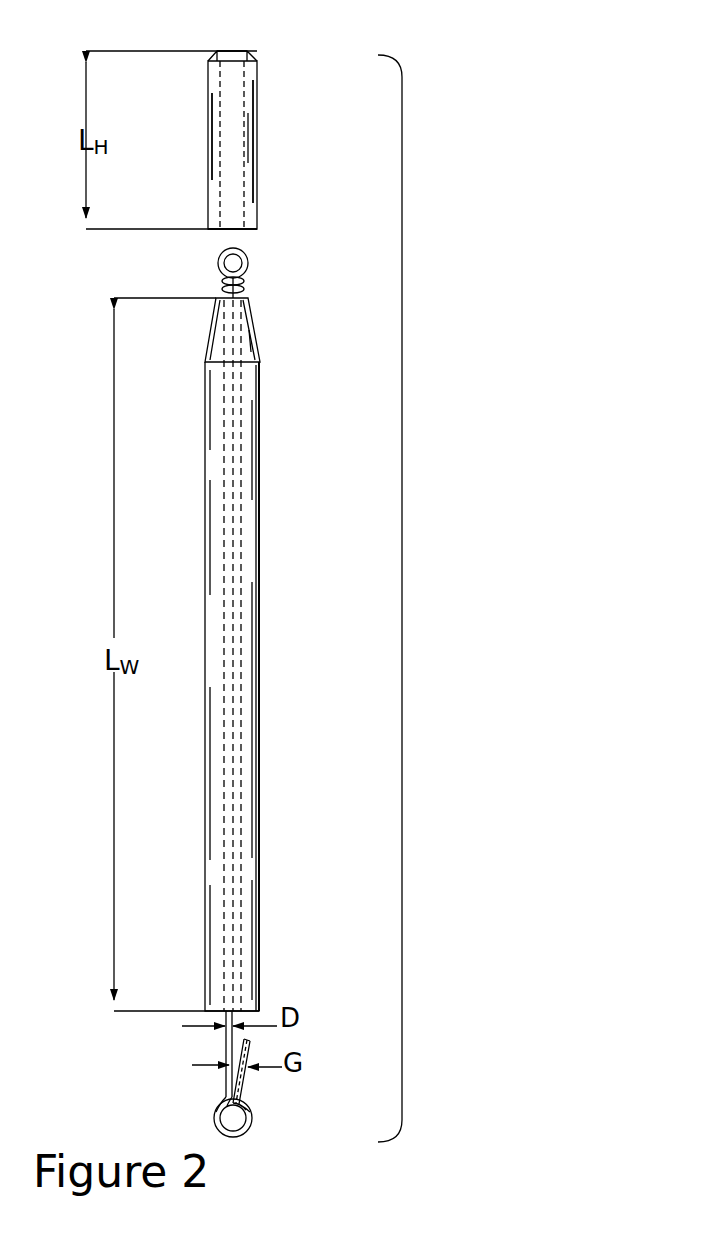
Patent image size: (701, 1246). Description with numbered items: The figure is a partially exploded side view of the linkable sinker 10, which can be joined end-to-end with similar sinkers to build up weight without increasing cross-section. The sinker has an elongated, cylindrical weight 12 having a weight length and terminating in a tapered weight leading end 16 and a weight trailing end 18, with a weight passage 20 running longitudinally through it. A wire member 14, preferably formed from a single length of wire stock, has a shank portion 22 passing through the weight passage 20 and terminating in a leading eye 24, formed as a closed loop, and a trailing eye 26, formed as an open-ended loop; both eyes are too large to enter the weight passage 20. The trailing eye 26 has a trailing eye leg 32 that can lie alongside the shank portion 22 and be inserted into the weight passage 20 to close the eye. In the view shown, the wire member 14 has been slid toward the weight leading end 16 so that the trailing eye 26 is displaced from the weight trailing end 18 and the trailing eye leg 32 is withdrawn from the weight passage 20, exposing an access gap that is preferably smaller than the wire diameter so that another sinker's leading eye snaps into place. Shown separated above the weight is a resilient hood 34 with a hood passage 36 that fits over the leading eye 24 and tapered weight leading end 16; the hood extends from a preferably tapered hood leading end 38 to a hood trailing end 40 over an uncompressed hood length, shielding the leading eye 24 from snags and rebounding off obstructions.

The linkable sinker 10 is at (402, 598).
The elongated weight 12 is at (265, 605).
The wire member 14 is at (249, 283).
The weight leading end 16 is at (247, 337).
The weight trailing end 18 is at (253, 1002).
The weight passage 20 is at (240, 837).
The shank portion 22 is at (228, 1047).
The leading eye 24 is at (218, 263).
The trailing eye 26 is at (258, 1118).
The trailing eye leg 32 is at (243, 1082).
The resilient hood 34 is at (265, 137).
The hood passage 36 is at (245, 125).
The hood leading end 38 is at (252, 57).
The hood trailing end 40 is at (250, 227).